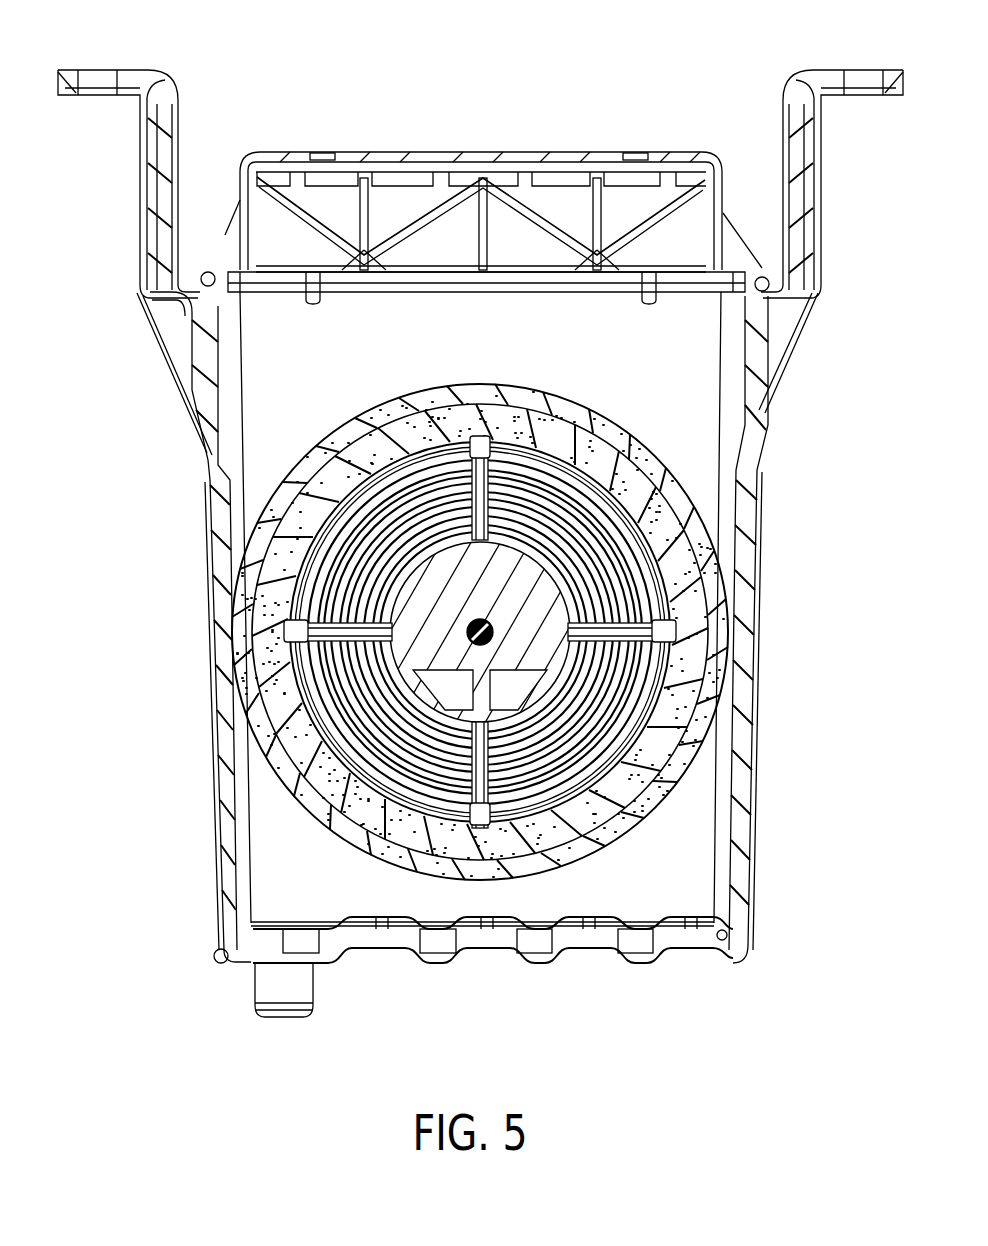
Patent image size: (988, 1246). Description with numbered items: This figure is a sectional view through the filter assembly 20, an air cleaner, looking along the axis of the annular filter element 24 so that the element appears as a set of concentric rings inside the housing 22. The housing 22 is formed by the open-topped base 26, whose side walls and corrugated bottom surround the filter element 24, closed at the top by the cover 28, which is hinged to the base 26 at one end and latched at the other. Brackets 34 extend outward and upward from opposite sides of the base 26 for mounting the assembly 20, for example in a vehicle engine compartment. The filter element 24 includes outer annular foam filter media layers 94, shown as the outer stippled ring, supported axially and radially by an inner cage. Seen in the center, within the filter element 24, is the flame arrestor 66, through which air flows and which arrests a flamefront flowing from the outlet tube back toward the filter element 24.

The filter assembly 20 is at (480, 509).
The housing 22 is at (474, 654).
The filter element 24 is at (435, 603).
The base 26 is at (223, 733).
The cover 28 is at (248, 157).
The brackets 34 is at (128, 82).
The flame arrestor 66 is at (323, 667).
The outer annular filter media layers 94 is at (588, 437).